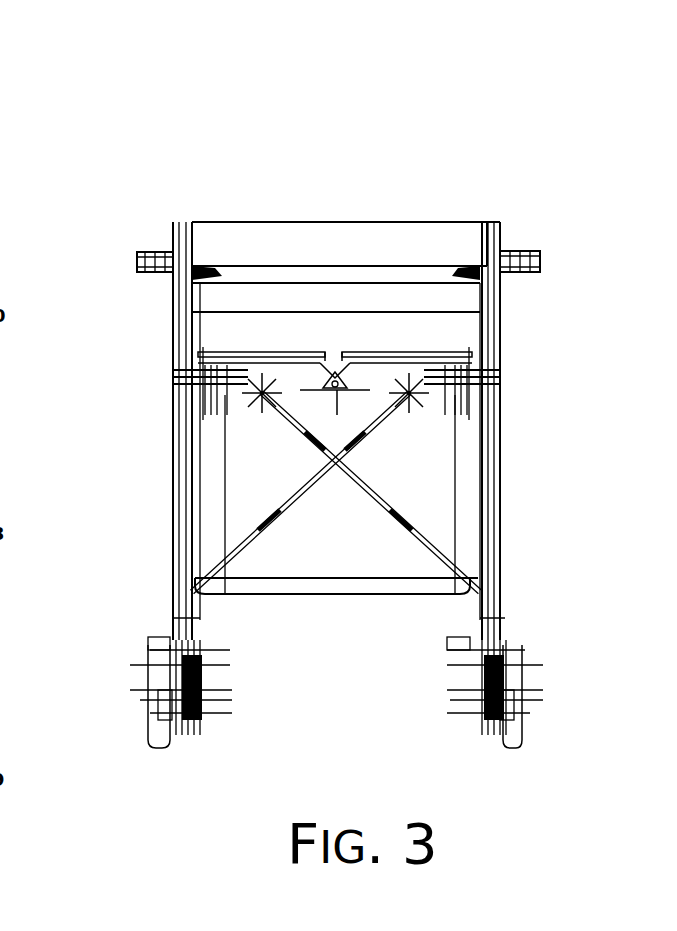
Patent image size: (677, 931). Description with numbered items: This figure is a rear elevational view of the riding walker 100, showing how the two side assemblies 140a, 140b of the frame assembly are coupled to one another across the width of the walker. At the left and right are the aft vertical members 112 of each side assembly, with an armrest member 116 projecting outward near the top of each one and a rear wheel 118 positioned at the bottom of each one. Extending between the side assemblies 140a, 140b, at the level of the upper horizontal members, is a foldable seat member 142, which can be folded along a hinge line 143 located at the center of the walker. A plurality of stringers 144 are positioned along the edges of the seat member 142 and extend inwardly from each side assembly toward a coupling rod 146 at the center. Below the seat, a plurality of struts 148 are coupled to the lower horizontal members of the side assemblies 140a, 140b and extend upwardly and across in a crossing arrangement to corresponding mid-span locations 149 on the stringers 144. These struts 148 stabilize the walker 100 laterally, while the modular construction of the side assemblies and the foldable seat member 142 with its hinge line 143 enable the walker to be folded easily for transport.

The walker 100 is at (520, 82).
The side assembly 140a is at (115, 160).
The side assembly 140b is at (545, 157).
The aft vertical member 112 is at (175, 425).
The armrest member 116 is at (142, 254).
The rear wheel 118 is at (152, 748).
The foldable seat member 142 is at (235, 352).
The hinge line 143 is at (325, 355).
The stringer 144 is at (200, 360).
The coupling rod 146 is at (345, 396).
The strut 148 is at (318, 470).
The mid-span location 149 is at (258, 398).